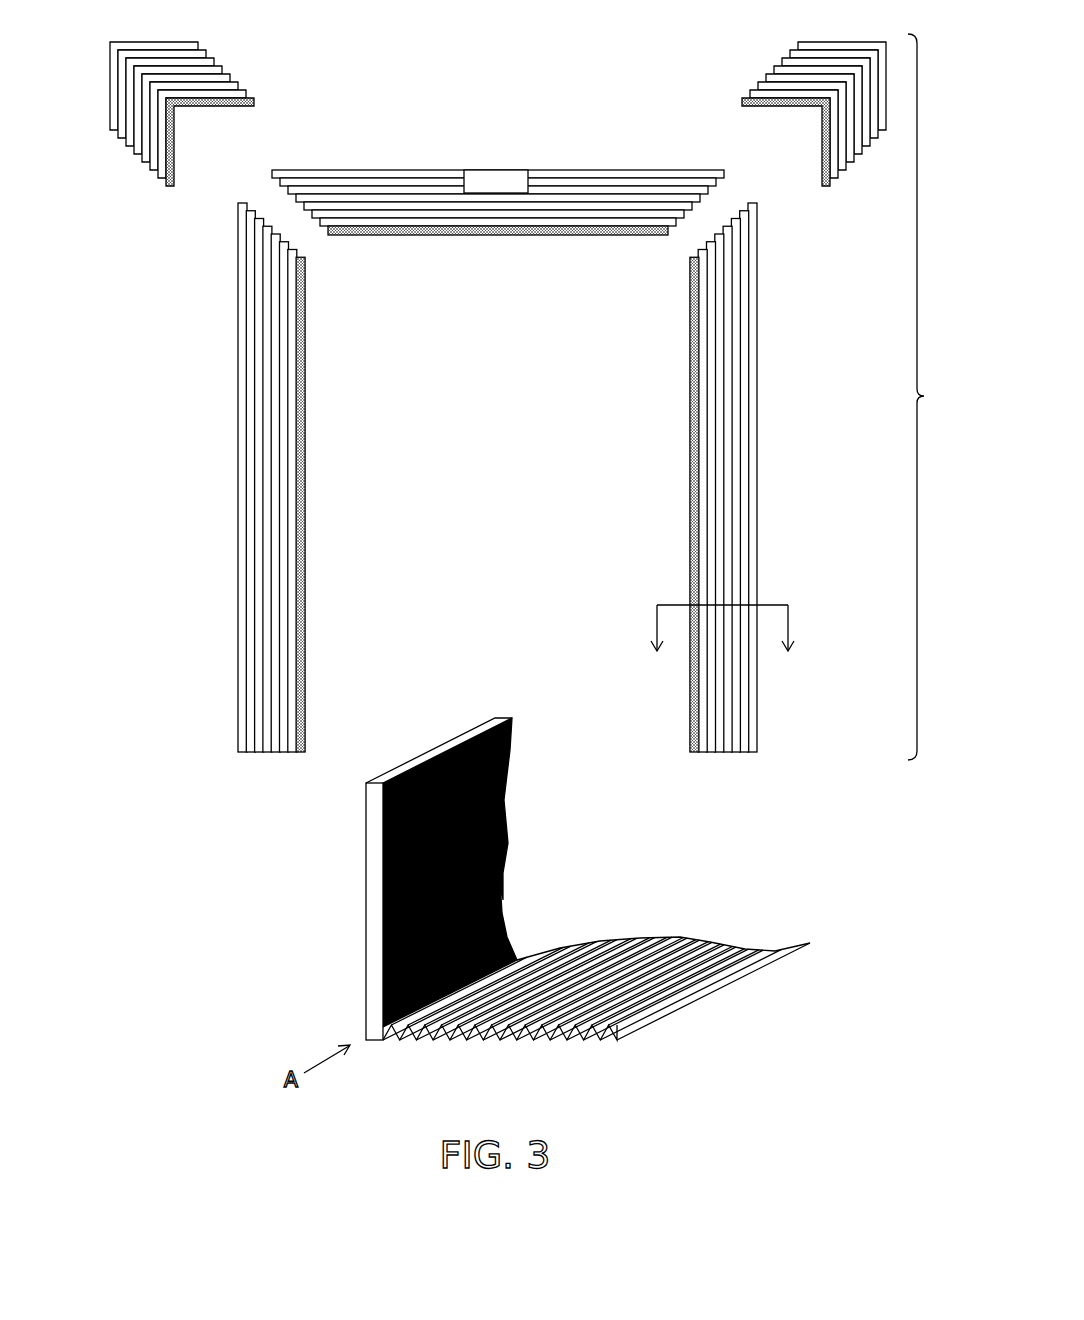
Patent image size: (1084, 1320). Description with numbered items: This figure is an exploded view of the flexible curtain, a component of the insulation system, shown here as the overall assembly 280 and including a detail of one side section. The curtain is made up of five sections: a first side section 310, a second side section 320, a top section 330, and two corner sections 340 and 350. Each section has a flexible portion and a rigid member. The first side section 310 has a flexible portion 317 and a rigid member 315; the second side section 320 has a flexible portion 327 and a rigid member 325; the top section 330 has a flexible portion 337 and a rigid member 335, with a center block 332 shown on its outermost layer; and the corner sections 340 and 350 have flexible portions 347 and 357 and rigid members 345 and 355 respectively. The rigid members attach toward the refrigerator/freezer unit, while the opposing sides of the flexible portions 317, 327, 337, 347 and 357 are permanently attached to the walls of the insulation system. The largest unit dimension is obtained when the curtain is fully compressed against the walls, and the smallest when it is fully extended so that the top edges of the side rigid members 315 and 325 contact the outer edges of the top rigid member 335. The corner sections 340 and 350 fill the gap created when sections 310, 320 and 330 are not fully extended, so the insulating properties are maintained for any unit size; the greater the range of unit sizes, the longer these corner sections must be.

The layered panel assembly 280 is at (937, 397).
The curtain section 310 is at (270, 477).
The rigid member 315 is at (305, 453).
The flexible portion 317 is at (238, 404).
The curtain section 320 is at (563, 646).
The rigid member 325 is at (690, 453).
The flexible portion 327 is at (757, 404).
The curtain section 330 is at (498, 193).
The top center block 332 is at (497, 179).
The rigid member 335 is at (443, 235).
The flexible portion 337 is at (385, 170).
The corner section 340 is at (199, 114).
The rigid member 345 is at (252, 105).
The flexible portion 347 is at (142, 42).
The corner section 350 is at (796, 114).
The rigid member 355 is at (745, 109).
The flexible portion 357 is at (854, 42).